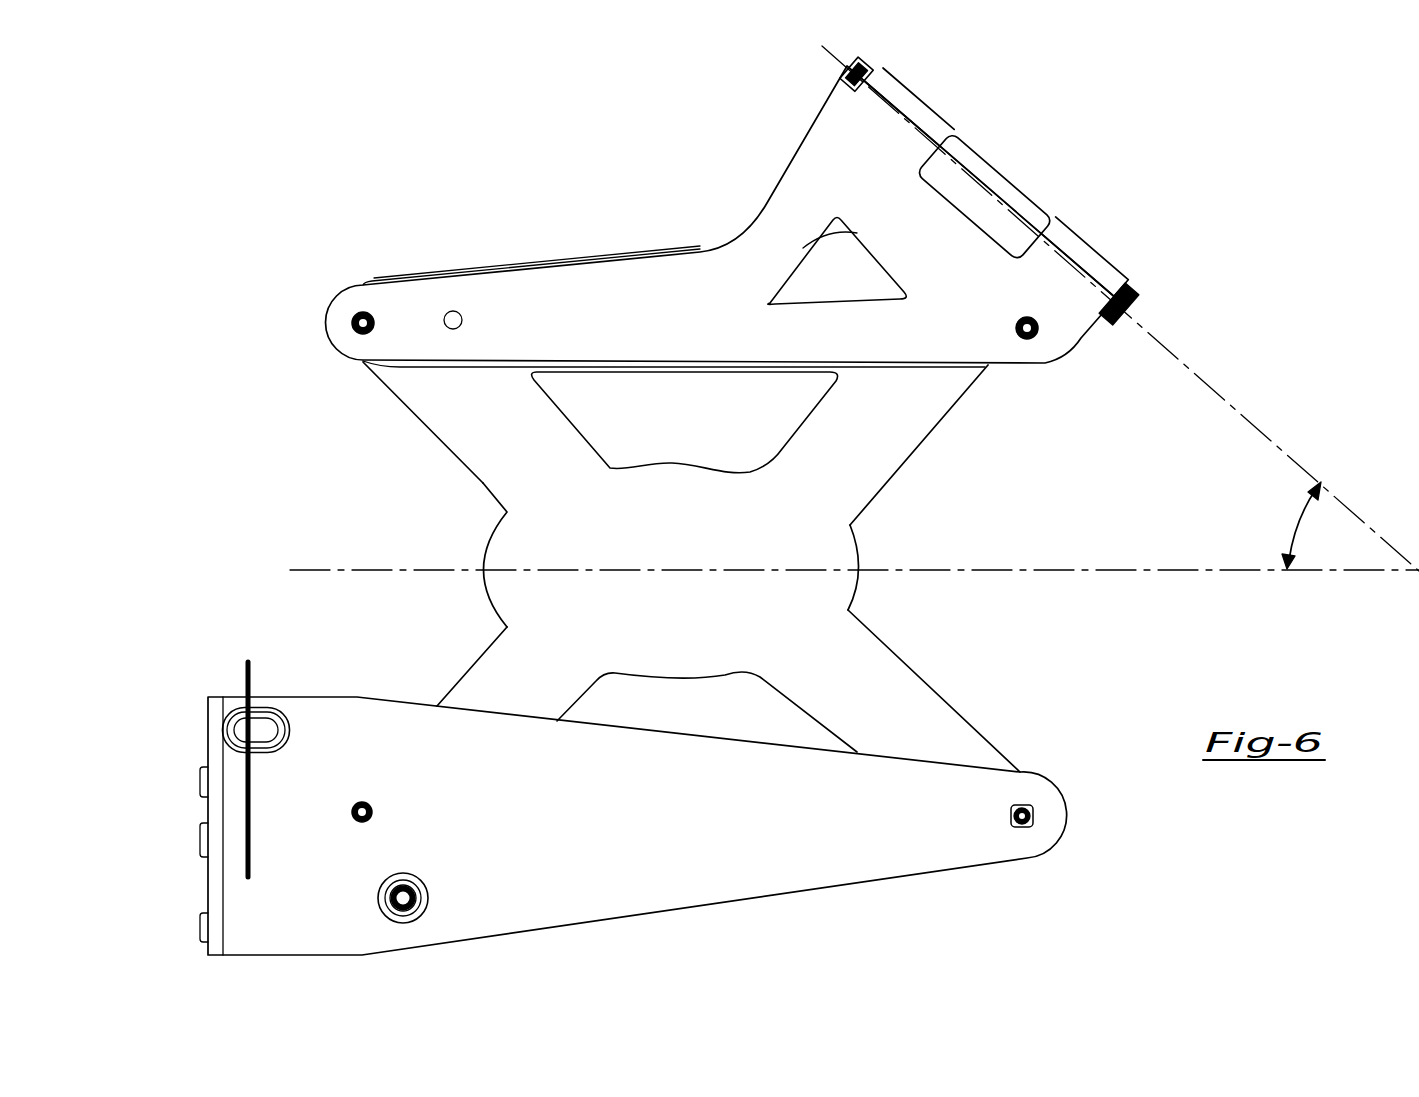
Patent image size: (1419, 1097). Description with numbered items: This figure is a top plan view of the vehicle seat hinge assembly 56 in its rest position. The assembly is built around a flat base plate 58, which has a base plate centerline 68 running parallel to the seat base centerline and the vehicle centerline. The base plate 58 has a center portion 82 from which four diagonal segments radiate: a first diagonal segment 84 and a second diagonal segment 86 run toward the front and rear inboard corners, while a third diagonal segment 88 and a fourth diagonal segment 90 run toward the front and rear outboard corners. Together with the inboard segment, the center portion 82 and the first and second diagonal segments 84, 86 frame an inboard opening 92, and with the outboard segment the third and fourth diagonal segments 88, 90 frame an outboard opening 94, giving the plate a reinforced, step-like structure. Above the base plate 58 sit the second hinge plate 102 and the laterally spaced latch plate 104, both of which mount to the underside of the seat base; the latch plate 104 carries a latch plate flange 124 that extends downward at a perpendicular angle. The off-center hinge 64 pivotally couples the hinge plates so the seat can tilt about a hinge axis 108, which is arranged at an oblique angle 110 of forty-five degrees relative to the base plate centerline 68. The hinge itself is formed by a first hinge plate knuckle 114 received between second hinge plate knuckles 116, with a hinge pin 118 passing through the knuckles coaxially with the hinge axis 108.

The vehicle seat hinge assembly 56 is at (468, 136).
The base plate 58 is at (476, 546).
The off-center hinge 64 is at (1025, 189).
The base plate centerline 68 is at (1090, 570).
The center portion 82 is at (682, 566).
The first diagonal segment 84 is at (887, 427).
The second diagonal segment 86 is at (478, 417).
The third diagonal segment 88 is at (878, 700).
The fourth diagonal segment 90 is at (505, 682).
The inboard opening 92 is at (695, 427).
The outboard opening 94 is at (685, 718).
The second hinge plate 102 is at (641, 287).
The latch plate 104 is at (589, 808).
The hinge axis 108 is at (1250, 420).
The oblique angle 110 is at (1293, 527).
The first hinge plate knuckle 114 is at (970, 153).
The second hinge plate knuckles 116 is at (920, 112).
The hinge pin 118 is at (1133, 310).
The latch plate flange 124 is at (217, 820).